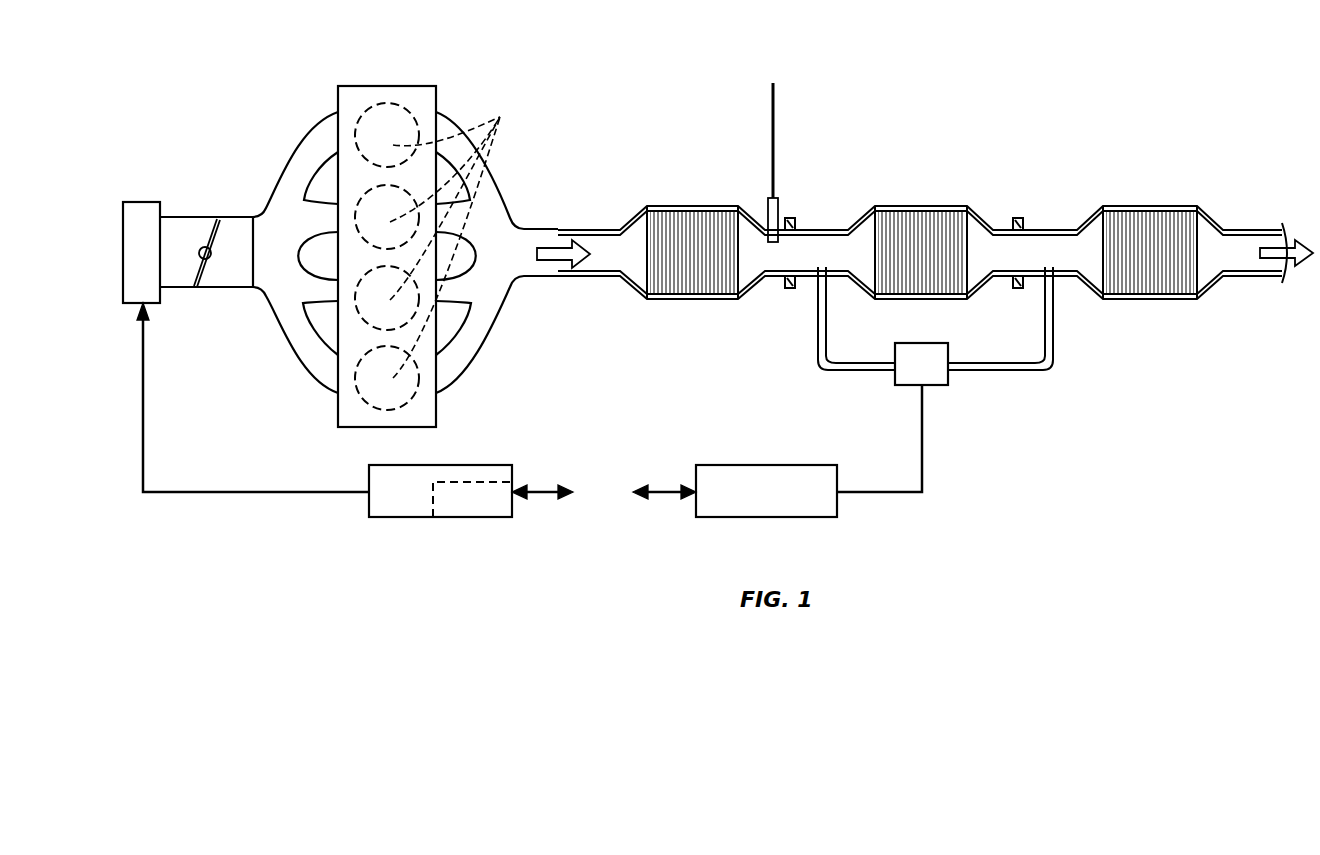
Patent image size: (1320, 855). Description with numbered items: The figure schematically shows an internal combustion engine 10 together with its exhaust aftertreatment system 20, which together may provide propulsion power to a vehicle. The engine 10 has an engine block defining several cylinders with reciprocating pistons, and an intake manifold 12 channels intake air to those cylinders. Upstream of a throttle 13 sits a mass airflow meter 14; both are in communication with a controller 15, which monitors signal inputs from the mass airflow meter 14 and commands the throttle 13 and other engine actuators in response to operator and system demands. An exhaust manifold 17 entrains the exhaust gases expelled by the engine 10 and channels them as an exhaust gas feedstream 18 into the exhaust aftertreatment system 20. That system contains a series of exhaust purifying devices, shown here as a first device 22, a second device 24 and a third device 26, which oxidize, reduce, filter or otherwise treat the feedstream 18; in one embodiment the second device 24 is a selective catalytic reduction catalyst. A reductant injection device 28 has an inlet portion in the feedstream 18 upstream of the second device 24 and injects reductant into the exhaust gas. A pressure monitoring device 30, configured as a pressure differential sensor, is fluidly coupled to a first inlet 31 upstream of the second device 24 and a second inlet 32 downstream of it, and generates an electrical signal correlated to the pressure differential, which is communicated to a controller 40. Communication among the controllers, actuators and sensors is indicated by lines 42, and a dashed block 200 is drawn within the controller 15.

The internal combustion engine 10 is at (363, 78).
The intake manifold 12 is at (284, 152).
The throttle 13 is at (203, 216).
The mass airflow meter 14 is at (142, 200).
The controller 15 is at (425, 530).
The exhaust manifold 17 is at (462, 242).
The exhaust gas feedstream 18 is at (551, 248).
The exhaust aftertreatment system 20 is at (800, 182).
The first device 22 is at (688, 236).
The second device 24 is at (932, 236).
The third device 26 is at (1155, 230).
The reductant injection device 28 is at (766, 196).
The pressure monitoring device 30 is at (930, 373).
The first inlet 31 is at (812, 292).
The second inlet 32 is at (1055, 288).
The controller 40 is at (809, 451).
The lines 42 is at (538, 494).
The control module 200 is at (472, 499).